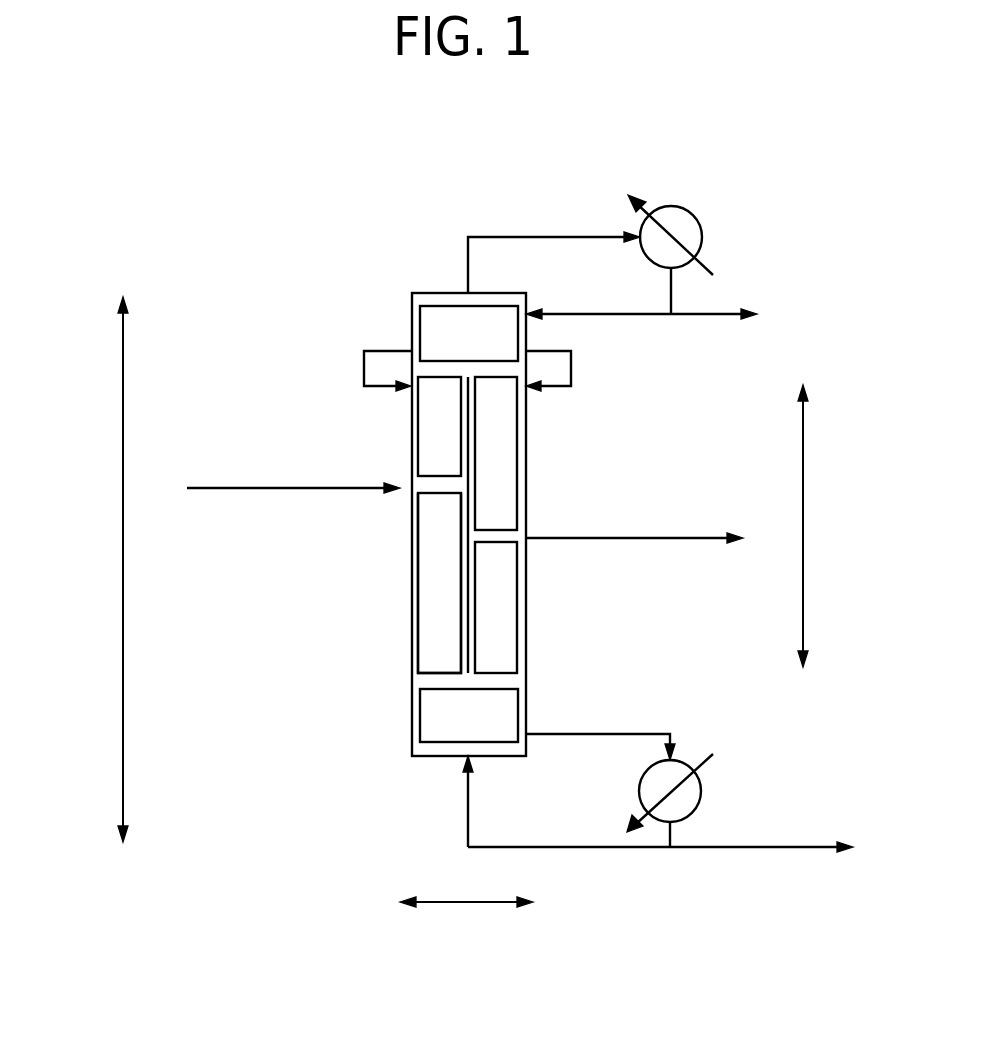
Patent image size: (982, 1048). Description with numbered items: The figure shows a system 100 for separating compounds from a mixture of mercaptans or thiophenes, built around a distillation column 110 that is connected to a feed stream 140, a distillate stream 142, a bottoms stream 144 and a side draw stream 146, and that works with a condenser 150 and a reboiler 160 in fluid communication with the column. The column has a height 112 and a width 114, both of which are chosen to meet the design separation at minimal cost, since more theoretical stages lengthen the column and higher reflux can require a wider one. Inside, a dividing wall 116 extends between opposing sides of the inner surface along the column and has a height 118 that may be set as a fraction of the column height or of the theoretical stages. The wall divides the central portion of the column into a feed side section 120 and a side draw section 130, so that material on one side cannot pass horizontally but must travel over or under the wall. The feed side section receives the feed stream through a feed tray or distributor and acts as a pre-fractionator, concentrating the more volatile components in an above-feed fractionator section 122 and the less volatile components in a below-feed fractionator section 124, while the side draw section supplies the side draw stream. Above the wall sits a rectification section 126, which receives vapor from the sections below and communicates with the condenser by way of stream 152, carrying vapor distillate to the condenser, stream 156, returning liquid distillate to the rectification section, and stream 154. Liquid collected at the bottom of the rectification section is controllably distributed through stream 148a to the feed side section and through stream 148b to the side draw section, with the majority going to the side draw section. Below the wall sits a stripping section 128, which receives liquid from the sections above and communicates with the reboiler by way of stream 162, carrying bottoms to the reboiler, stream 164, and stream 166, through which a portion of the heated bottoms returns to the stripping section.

The system 100 is at (226, 287).
The distillation column 110 is at (412, 307).
The height of column 112 is at (108, 556).
The width of column 114 is at (436, 888).
The dividing wall 116 is at (468, 610).
The height of dividing wall 118 is at (820, 525).
The feed side section 120 is at (437, 512).
The above-feed fractionator section 122 is at (437, 430).
The below-feed fractionator section 124 is at (435, 598).
The rectification section 126 is at (440, 325).
The stripping section 128 is at (437, 715).
The side draw section 130 is at (494, 468).
The feed stream 140 is at (275, 473).
The distillate stream 142 is at (723, 317).
The bottoms stream 144 is at (820, 845).
The side draw stream 146 is at (648, 522).
The stream 148a is at (364, 368).
The stream 148b is at (571, 373).
The condenser 150 is at (703, 239).
The stream 152 is at (560, 237).
The stream 154 is at (671, 295).
The stream 156 is at (610, 313).
The reboiler 160 is at (688, 773).
The stream 162 is at (563, 734).
The stream 164 is at (670, 835).
The stream 166 is at (573, 846).